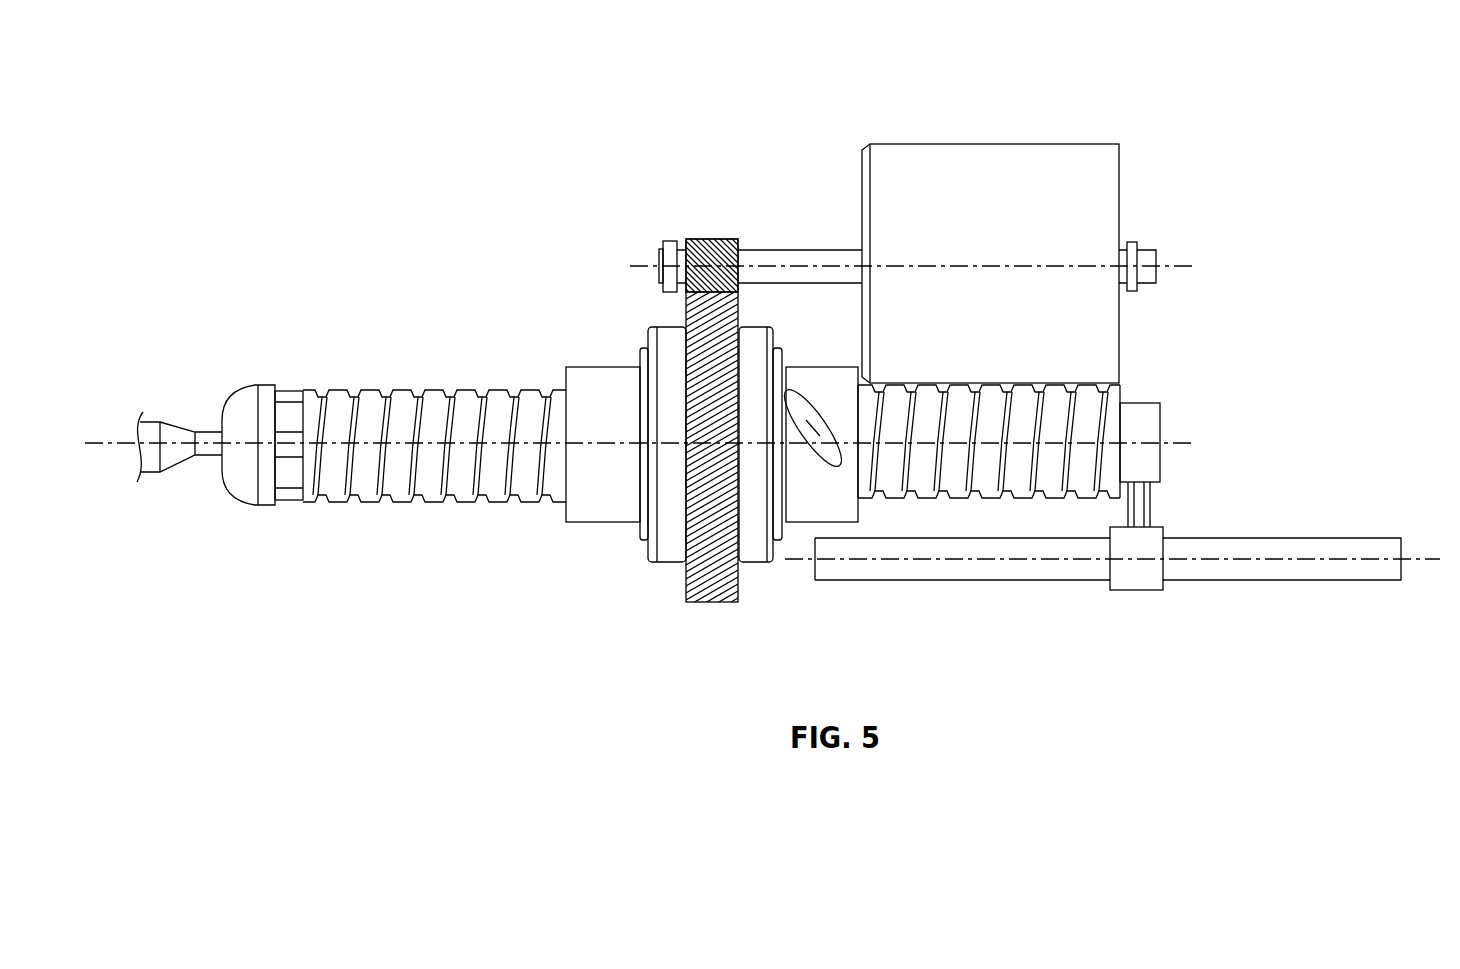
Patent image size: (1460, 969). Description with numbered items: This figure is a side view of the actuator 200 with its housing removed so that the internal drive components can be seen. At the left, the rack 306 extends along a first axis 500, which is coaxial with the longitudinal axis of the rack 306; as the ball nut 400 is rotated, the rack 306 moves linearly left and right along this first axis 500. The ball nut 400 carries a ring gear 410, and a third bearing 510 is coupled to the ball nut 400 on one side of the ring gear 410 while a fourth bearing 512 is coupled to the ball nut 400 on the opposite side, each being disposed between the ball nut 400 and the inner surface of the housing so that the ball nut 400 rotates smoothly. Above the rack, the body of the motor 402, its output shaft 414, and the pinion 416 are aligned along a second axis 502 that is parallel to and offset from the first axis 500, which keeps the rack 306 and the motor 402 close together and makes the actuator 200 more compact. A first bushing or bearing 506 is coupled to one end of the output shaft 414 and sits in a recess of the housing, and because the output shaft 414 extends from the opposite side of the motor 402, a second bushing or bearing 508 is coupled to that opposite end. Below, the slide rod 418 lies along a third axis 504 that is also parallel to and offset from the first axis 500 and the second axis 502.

The actuator 200 is at (250, 114).
The rack 306 is at (396, 402).
The ball nut 400 is at (595, 498).
The motor 402 is at (1003, 160).
The ring gear 410 is at (708, 582).
The output shaft 414 is at (795, 258).
The pinion 416 is at (727, 256).
The slide rod 418 is at (1240, 568).
The first axis 500 is at (1195, 442).
The second axis 502 is at (1190, 264).
The third axis 504 is at (1433, 560).
The first bushing or bearing 506 is at (670, 252).
The second bushing or bearing 508 is at (1130, 242).
The third bearing 510 is at (667, 545).
The fourth bearing 512 is at (758, 545).